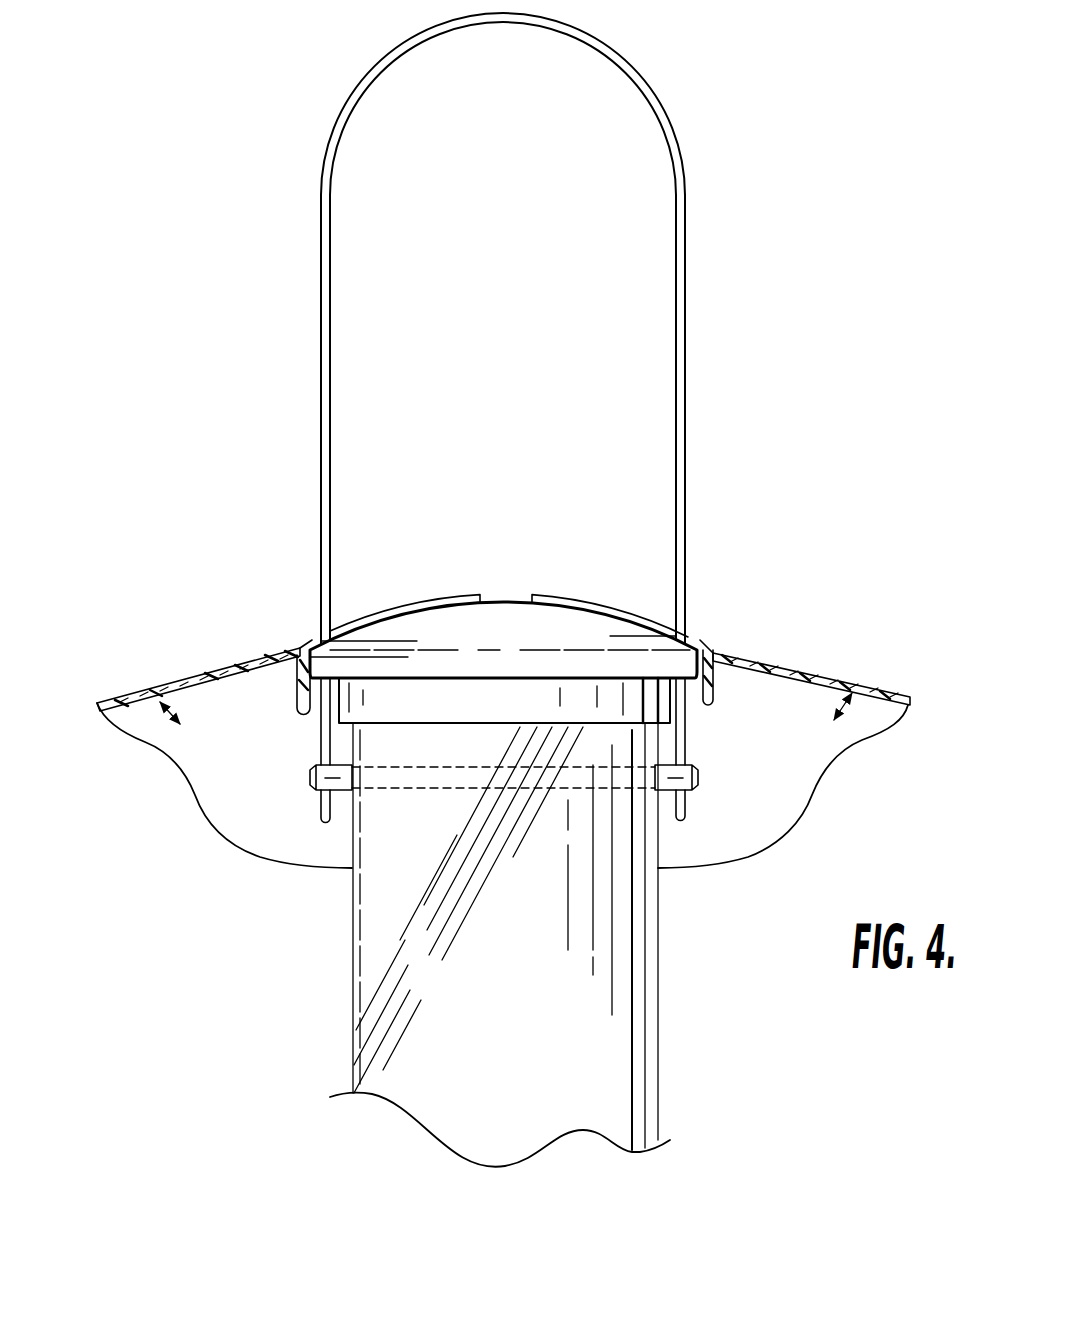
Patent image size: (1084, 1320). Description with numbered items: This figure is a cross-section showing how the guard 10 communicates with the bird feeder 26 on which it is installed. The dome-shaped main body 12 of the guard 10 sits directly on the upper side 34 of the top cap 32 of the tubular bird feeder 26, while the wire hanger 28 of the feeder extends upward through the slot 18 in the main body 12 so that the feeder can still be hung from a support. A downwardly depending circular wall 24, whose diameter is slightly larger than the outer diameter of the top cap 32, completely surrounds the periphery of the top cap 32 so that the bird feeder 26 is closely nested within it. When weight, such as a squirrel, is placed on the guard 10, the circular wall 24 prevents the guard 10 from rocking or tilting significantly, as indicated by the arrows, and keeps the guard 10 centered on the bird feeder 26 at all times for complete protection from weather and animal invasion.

The guard 10 is at (814, 623).
The main body 12 is at (900, 686).
The slot 18 is at (420, 603).
The circular wall 24 is at (303, 680).
The bird feeder 26 is at (680, 1051).
The wire hanger 28 is at (683, 307).
The top cap 32 is at (610, 635).
The upper side 34 is at (572, 605).